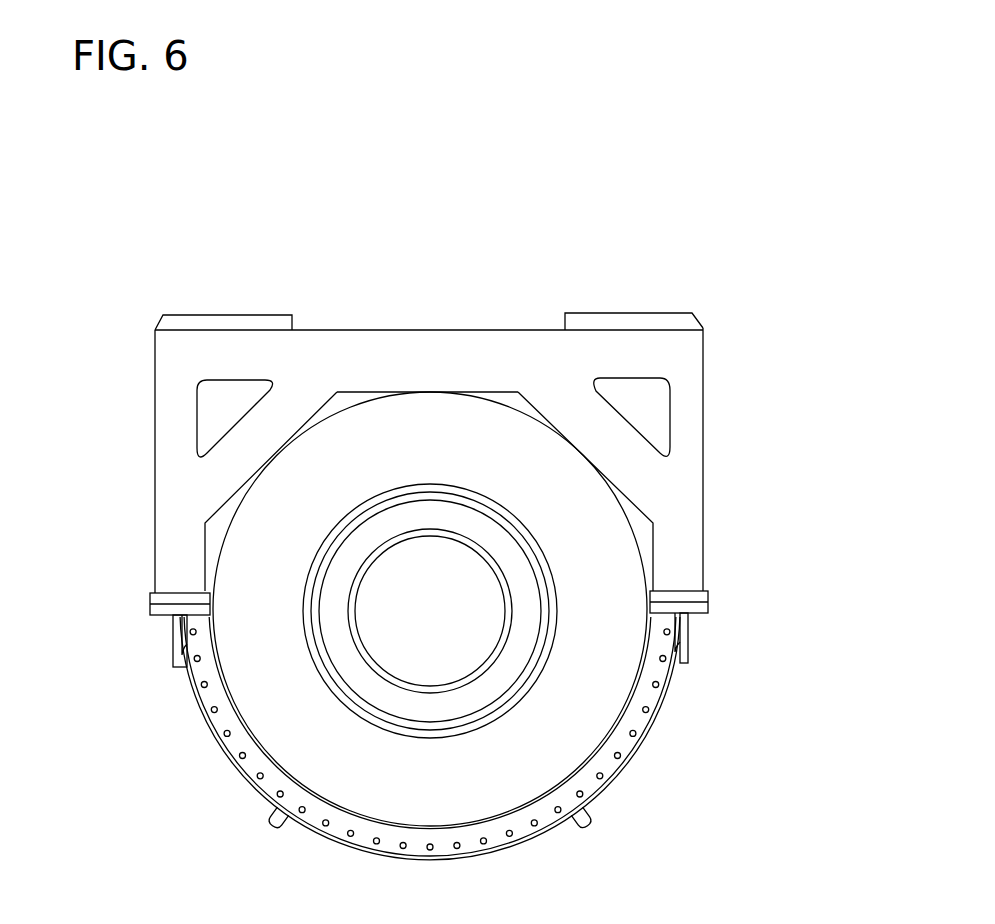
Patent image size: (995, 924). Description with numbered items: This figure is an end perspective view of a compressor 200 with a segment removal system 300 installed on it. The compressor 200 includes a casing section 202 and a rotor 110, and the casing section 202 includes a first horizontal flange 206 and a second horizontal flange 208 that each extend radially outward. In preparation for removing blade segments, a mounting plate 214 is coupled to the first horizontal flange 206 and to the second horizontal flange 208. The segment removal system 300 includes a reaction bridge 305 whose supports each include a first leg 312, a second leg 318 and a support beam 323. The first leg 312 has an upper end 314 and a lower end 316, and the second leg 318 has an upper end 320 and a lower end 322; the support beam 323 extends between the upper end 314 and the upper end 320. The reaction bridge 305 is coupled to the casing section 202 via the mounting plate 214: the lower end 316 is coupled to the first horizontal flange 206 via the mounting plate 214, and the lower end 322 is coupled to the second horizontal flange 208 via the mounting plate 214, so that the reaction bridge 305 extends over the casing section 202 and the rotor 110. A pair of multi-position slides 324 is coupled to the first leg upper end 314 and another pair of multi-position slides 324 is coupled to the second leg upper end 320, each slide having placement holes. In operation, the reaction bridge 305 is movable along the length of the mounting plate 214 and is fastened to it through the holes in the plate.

The compressor 200 is at (760, 217).
The rotor 110 is at (365, 775).
The casing section 202 is at (250, 770).
The first horizontal flange 206 is at (163, 633).
The second horizontal flange 208 is at (698, 628).
The mounting plate 214 is at (150, 609).
The segment removal system 300 is at (135, 355).
The reaction bridge 305 is at (405, 296).
The first leg 312 is at (180, 470).
The upper end 314 is at (155, 377).
The lower end 316 is at (160, 587).
The second leg 318 is at (683, 458).
The upper end 320 is at (698, 343).
The lower end 322 is at (708, 548).
The support beam 323 is at (372, 341).
The multi-position slides 324 is at (191, 318).